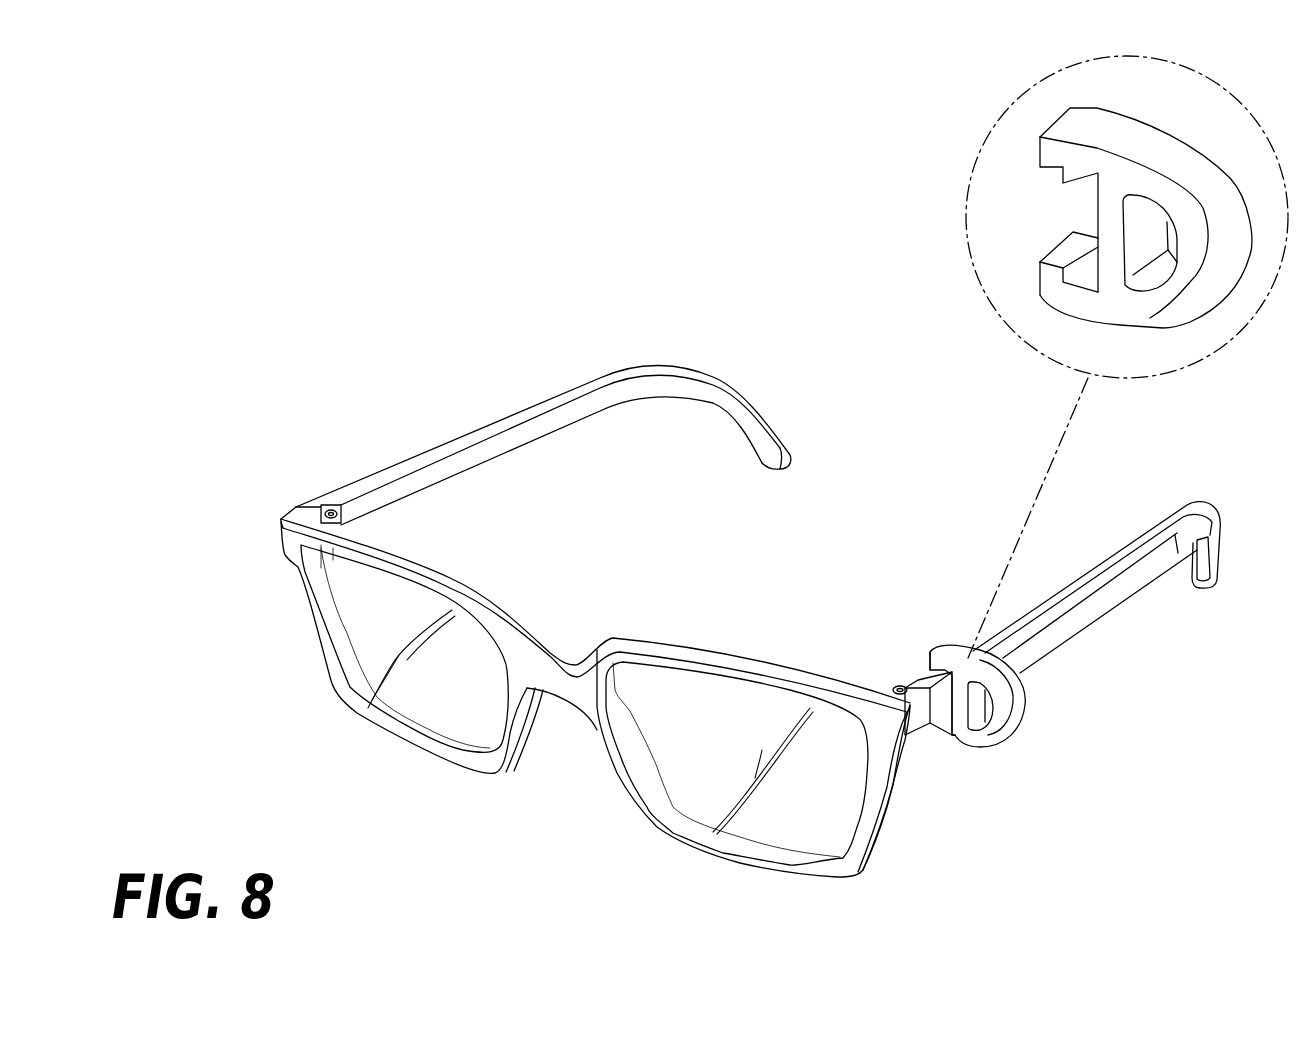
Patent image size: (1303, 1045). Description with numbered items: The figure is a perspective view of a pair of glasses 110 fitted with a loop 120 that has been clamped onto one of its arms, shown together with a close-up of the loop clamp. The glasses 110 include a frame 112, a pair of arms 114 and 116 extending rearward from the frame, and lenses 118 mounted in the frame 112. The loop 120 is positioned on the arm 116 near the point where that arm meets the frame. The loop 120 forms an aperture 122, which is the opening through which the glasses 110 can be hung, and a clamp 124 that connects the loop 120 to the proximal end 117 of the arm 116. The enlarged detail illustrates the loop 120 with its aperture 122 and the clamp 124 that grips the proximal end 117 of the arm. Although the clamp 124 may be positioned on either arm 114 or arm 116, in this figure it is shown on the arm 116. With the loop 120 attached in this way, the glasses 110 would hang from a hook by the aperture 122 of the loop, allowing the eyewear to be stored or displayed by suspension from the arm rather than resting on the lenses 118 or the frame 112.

The glasses 110 is at (653, 268).
The frame 112 is at (611, 655).
The arm 114 is at (437, 478).
The arm 116 is at (1077, 620).
The proximal end 117 is at (942, 717).
The lenses 118 is at (670, 753).
The loop 120 is at (1000, 743).
The aperture 122 is at (980, 705).
The clamp 124 is at (943, 650).